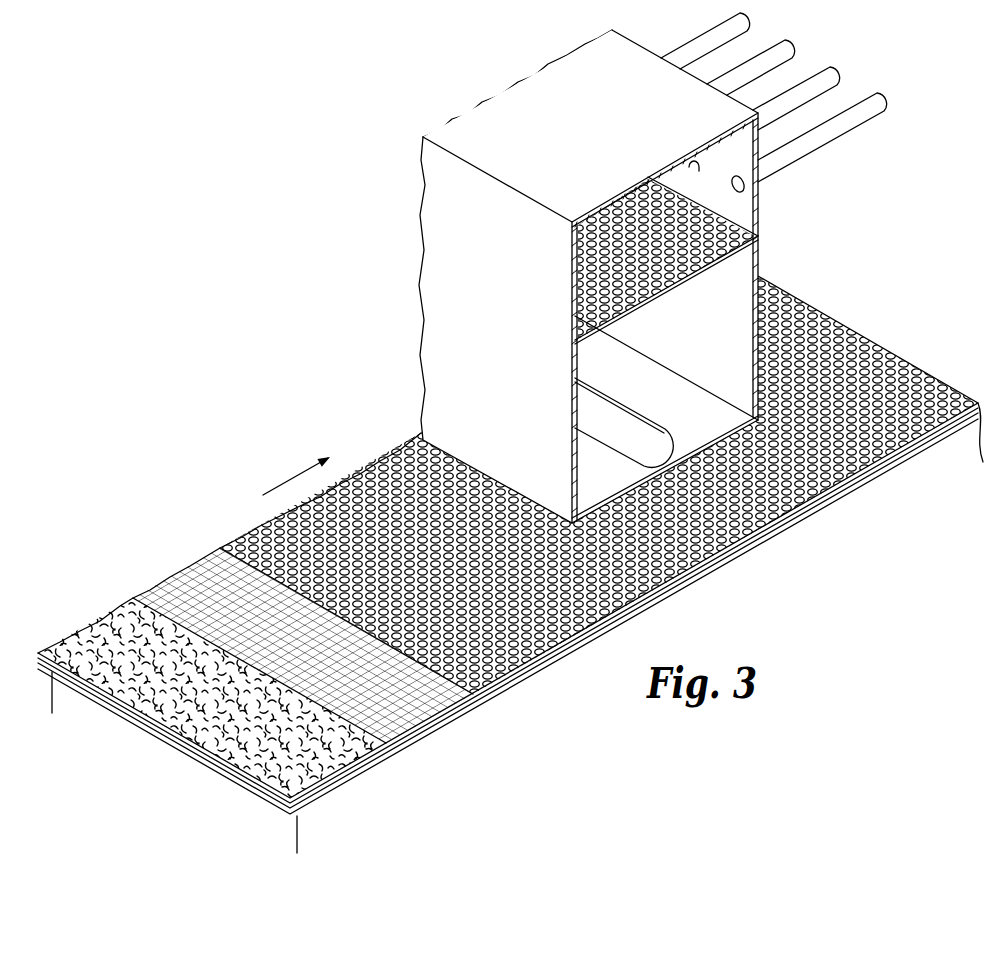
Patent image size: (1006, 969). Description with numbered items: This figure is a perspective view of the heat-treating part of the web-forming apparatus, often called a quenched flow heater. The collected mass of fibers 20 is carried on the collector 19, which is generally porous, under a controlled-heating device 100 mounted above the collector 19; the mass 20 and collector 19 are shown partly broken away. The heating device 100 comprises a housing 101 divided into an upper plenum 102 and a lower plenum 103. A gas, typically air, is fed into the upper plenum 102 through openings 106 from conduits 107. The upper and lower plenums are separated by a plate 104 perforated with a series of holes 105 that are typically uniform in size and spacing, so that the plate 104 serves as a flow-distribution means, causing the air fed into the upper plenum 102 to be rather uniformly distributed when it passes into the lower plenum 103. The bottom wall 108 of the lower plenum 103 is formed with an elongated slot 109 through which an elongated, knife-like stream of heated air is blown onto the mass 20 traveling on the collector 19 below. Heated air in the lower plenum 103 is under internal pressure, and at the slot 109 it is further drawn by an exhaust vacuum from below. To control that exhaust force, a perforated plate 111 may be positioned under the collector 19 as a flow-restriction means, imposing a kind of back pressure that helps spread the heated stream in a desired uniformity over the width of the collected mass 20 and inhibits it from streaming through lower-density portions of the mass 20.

The controlled-heating device 100 is at (440, 108).
The housing 101 is at (528, 86).
The upper plenum 102 is at (751, 216).
The lower plenum 103 is at (738, 364).
The plate 104 is at (724, 258).
The holes 105 is at (681, 277).
The openings 106 is at (743, 192).
The conduits 107 is at (862, 100).
The bottom wall 108 is at (716, 428).
The elongated slot 109 is at (621, 418).
The perforated plate 111 is at (961, 392).
The collector 19 is at (210, 568).
The mass of fibers 20 is at (127, 607).